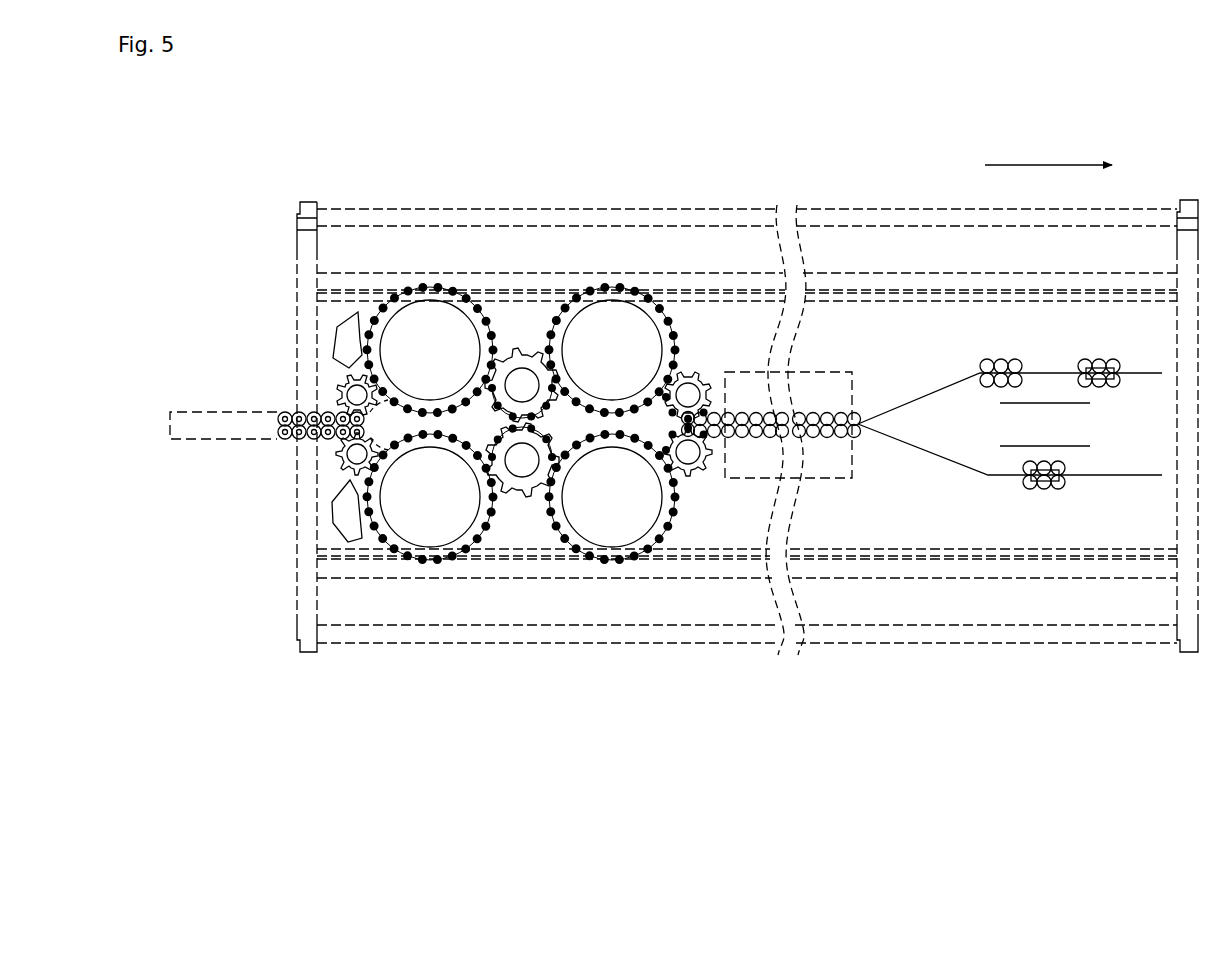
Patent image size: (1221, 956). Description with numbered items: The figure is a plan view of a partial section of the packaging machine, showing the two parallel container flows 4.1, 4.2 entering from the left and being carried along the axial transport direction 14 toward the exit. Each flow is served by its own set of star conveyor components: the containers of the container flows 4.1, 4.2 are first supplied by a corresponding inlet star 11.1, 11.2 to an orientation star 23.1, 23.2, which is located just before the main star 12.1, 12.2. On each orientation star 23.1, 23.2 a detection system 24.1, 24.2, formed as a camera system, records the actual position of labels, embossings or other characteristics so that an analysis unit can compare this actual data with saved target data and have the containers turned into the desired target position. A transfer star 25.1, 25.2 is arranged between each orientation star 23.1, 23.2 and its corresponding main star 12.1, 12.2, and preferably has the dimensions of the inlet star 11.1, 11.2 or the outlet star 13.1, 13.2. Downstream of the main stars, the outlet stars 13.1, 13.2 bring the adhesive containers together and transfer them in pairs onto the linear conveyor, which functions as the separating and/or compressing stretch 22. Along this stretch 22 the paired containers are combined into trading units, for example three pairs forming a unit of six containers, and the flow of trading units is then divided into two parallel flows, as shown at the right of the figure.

The container flow 4.1 is at (277, 437).
The container flow 4.2 is at (277, 413).
The inlet star 11.1 is at (355, 458).
The inlet star 11.2 is at (354, 391).
The main star 12.1 is at (623, 528).
The main star 12.2 is at (610, 333).
The outlet star 13.1 is at (704, 470).
The outlet star 13.2 is at (692, 378).
The axial transport direction 14 is at (1048, 154).
The separating and/or compressing stretch 22 is at (809, 390).
The orientation star 23.1 is at (426, 540).
The orientation star 23.2 is at (413, 333).
The detection system 24.1 is at (348, 525).
The detection system 24.2 is at (345, 326).
The transfer star 25.1 is at (523, 480).
The transfer star 25.2 is at (521, 364).